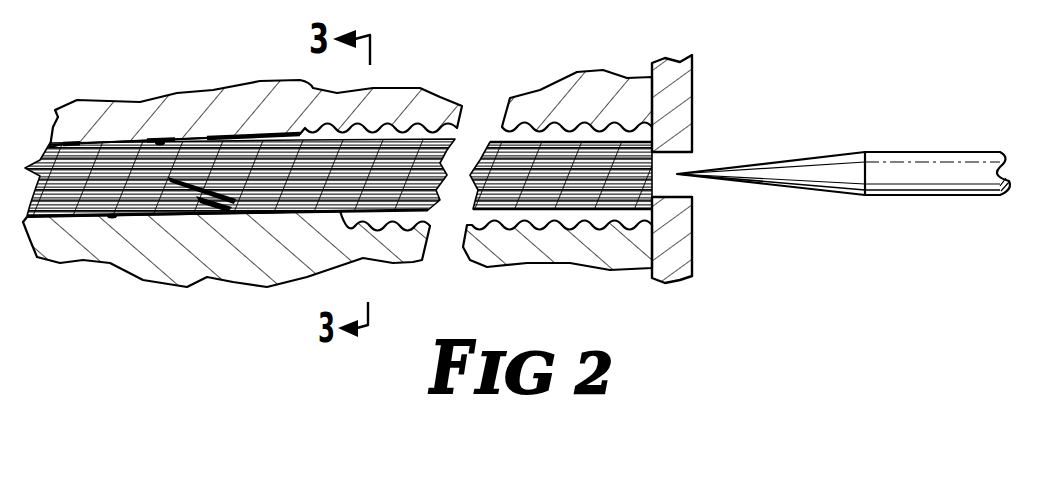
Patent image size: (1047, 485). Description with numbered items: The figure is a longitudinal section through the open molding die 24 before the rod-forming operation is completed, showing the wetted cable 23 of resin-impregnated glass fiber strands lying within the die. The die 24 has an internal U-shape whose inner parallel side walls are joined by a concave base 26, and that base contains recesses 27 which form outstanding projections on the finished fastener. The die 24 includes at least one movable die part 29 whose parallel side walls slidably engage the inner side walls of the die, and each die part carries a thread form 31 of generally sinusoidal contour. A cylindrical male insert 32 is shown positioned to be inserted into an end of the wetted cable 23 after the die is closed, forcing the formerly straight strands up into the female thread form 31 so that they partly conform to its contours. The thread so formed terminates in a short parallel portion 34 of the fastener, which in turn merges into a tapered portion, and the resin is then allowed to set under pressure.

The wetted cable 23 is at (326, 165).
The open molding die 24 is at (245, 262).
The concave base 26 is at (188, 215).
The recesses 27 is at (160, 143).
The movable die part 29 is at (425, 108).
The thread form 31 is at (558, 130).
The male insert 32 is at (895, 150).
The short parallel portion 34 is at (298, 130).